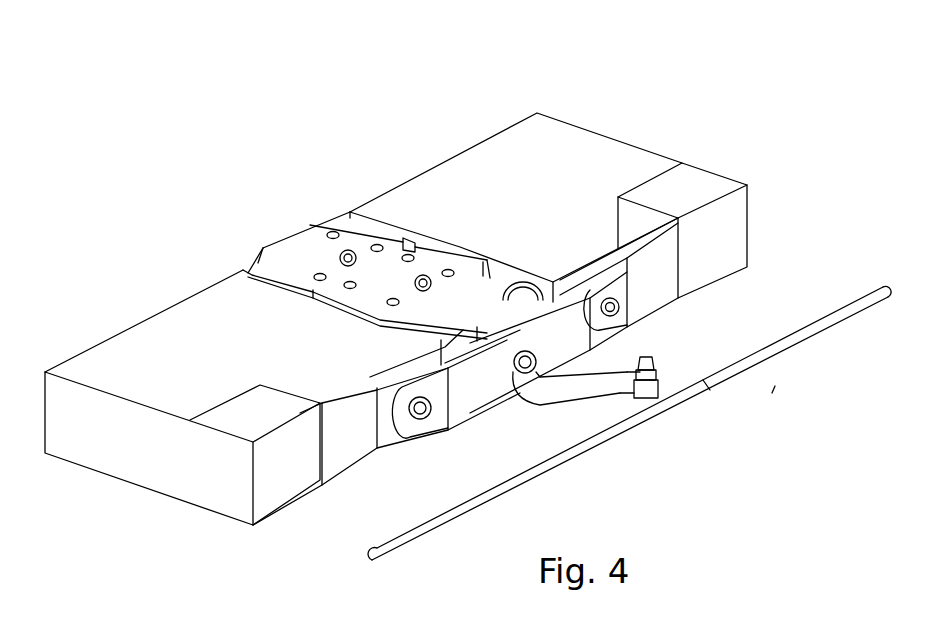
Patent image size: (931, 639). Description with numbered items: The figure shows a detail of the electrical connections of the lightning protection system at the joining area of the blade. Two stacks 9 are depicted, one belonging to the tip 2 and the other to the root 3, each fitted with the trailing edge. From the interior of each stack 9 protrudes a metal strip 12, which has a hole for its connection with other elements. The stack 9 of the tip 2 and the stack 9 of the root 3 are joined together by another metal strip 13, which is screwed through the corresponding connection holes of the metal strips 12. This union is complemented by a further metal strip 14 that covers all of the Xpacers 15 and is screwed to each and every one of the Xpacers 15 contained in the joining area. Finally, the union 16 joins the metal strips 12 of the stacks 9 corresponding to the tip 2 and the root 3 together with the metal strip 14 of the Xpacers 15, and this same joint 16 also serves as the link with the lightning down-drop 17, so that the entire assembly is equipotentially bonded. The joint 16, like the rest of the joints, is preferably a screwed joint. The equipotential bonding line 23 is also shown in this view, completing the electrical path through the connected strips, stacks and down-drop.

The tip 2 is at (128, 445).
The root 3 is at (558, 132).
The stack 9 is at (248, 410).
The metal strip 12 is at (345, 440).
The metal strip 13 is at (563, 328).
The metal strip 14 is at (300, 247).
The Xpacer 15 is at (350, 232).
The union 16 is at (525, 353).
The lightning down-drop 17 is at (772, 357).
The equipotential bonding line 23 is at (683, 162).